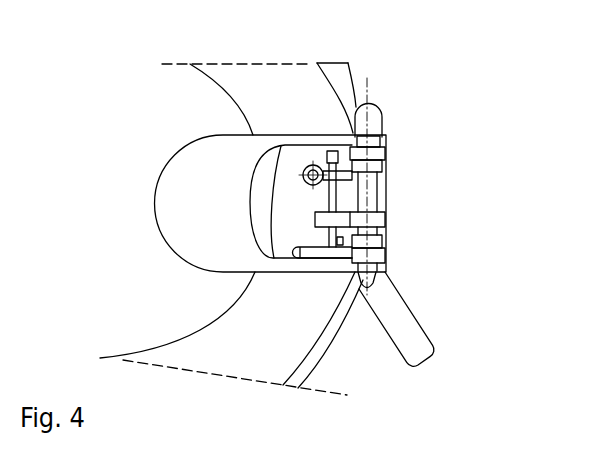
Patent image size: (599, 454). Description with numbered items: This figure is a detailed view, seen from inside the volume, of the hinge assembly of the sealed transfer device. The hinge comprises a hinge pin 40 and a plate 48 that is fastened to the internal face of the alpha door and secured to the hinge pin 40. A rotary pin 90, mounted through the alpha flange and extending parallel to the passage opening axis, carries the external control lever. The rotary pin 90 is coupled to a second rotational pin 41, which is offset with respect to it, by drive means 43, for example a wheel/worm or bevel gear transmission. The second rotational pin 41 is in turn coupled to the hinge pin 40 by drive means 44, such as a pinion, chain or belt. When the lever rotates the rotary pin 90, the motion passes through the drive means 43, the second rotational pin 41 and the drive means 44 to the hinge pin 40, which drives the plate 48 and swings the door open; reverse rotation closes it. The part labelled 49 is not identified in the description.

The hinge pin 40 is at (389, 119).
The second rotational pin 41 is at (338, 193).
The drive means 43 is at (348, 167).
The drive means 44 is at (387, 223).
The plate 48 is at (191, 152).
The handle 49 is at (438, 348).
The rotary pin 90 is at (323, 177).